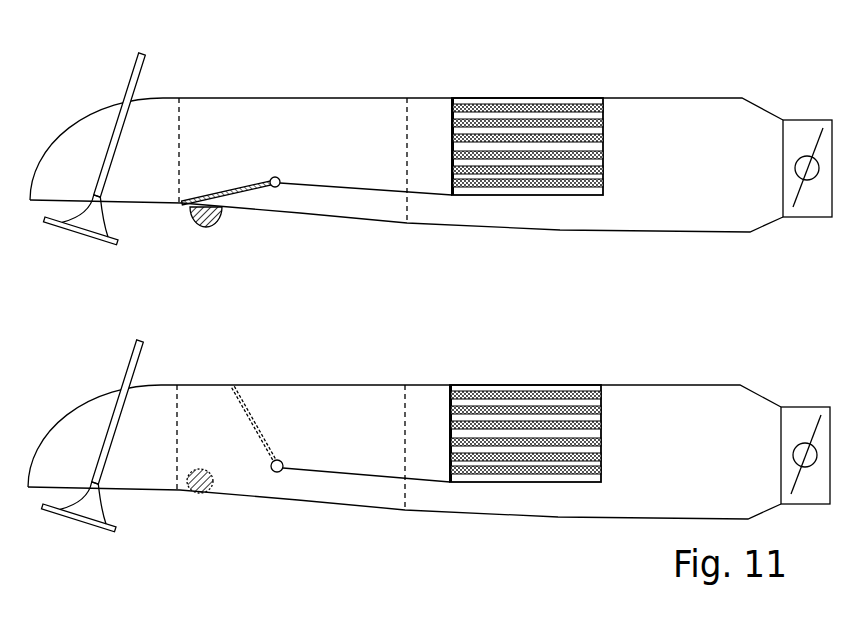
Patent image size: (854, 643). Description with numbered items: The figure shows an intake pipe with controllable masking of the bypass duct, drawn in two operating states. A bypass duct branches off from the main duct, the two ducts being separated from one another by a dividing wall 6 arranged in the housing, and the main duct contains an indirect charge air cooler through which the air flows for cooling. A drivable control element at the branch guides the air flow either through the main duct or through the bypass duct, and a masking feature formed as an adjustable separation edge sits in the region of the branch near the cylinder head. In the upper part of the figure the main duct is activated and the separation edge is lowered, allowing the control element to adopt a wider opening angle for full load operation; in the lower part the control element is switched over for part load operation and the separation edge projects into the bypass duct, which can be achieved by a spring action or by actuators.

The dividing wall 6 is at (355, 478).